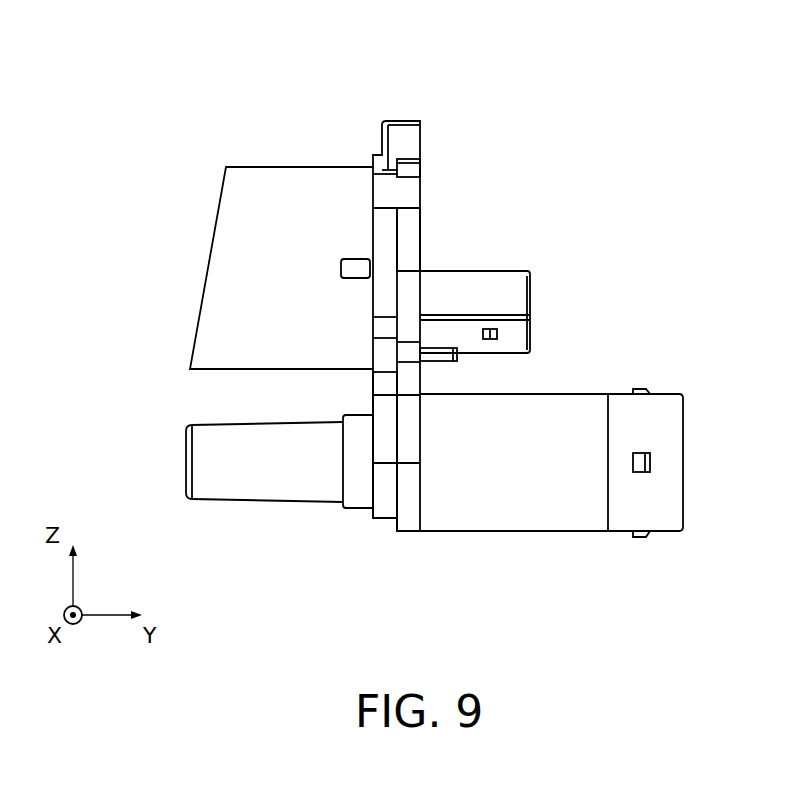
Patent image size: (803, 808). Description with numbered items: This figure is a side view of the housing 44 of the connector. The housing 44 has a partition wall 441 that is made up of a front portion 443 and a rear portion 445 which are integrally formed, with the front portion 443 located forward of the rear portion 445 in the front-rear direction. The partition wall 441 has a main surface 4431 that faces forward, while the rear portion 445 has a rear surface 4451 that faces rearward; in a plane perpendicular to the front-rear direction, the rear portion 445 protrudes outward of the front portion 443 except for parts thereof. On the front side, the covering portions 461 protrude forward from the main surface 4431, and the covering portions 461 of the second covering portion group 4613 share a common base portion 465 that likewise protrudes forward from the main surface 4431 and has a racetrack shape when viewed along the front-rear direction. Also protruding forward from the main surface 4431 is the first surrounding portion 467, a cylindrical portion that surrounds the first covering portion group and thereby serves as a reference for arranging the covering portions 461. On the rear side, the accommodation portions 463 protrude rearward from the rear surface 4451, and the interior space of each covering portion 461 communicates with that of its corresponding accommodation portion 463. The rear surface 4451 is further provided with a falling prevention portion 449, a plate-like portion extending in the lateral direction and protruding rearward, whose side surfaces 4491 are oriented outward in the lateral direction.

The housing 44 is at (437, 86).
The first surrounding portion 467 is at (283, 178).
The rear portion 445 is at (387, 386).
The rear surface 4451 is at (422, 232).
The main surface 4431 is at (373, 389).
The partition wall 441 is at (378, 523).
The front portion 443 is at (387, 498).
The falling prevention portion 449 is at (528, 351).
The side surfaces 4491 is at (437, 355).
The accommodation portions 463 is at (507, 342).
The covering portions 461 is at (201, 462).
The second covering portion group 4613 is at (215, 457).
The base portion 465 is at (358, 493).